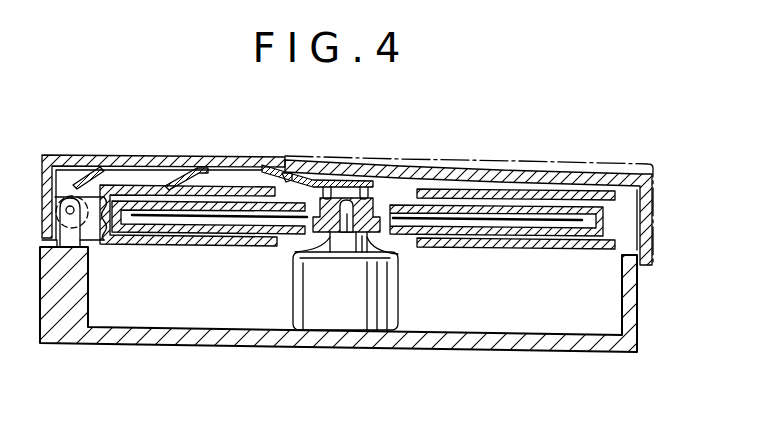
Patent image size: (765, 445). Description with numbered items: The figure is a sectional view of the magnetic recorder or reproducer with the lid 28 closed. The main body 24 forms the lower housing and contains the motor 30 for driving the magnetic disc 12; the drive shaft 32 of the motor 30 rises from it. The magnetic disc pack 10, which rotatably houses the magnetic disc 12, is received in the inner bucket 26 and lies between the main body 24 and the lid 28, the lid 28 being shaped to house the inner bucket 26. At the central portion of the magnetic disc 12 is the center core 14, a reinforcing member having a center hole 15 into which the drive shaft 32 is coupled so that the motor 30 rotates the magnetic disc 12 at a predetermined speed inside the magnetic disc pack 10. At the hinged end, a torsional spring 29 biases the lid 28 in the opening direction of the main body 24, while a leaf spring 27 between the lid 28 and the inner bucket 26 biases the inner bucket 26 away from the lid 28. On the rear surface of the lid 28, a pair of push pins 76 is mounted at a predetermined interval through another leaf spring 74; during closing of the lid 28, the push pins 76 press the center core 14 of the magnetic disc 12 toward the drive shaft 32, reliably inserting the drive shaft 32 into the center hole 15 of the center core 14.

The magnetic disc pack 10 is at (568, 244).
The magnetic disc 12 is at (518, 222).
The center core 14 is at (372, 197).
The center hole 15 is at (398, 254).
The main body 24 is at (362, 356).
The inner bucket 26 is at (545, 190).
The leaf spring 27 is at (177, 183).
The lid 28 is at (504, 164).
The torsional spring 29 is at (79, 156).
The motor 30 is at (375, 313).
The drive shaft 32 is at (328, 239).
The leaf spring 74 is at (316, 184).
The push pins 76 is at (346, 188).